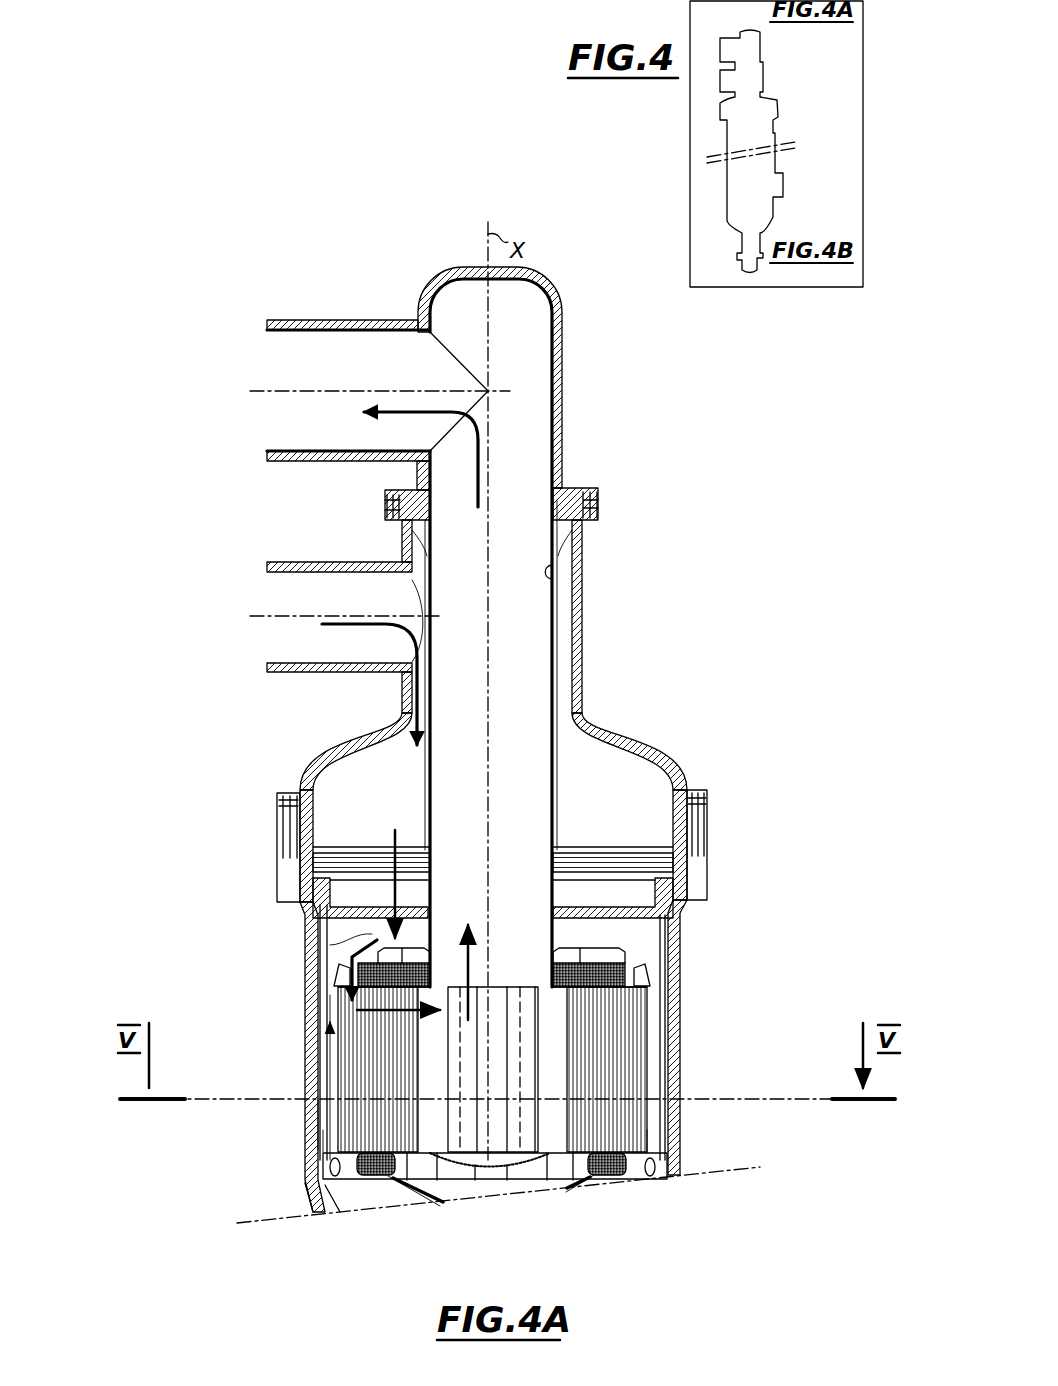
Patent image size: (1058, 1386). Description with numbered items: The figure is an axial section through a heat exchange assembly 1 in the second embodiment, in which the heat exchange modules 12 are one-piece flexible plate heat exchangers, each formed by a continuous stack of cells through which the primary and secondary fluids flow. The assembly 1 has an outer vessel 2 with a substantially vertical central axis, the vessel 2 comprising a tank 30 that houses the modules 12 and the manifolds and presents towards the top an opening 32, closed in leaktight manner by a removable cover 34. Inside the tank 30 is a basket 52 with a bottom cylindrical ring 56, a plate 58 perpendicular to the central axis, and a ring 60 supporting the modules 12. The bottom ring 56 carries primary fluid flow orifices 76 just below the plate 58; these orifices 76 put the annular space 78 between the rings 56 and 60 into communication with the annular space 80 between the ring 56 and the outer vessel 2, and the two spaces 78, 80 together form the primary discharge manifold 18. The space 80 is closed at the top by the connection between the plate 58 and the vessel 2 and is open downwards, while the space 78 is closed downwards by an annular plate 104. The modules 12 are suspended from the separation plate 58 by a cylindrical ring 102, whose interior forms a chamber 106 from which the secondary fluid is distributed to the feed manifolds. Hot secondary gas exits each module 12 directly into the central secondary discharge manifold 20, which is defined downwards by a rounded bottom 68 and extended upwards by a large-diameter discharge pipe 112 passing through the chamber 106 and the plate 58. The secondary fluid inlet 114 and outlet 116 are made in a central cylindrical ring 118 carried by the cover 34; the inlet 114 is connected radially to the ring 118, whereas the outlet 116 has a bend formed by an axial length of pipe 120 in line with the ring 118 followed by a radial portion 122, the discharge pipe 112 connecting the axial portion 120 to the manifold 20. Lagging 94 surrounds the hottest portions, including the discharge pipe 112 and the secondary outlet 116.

The heat exchange assembly 1 is at (748, 775).
The outer vessel 2 is at (300, 1171).
The heat exchange modules 12 is at (340, 1016).
The annular manifold 18 is at (318, 1195).
The central manifold 20 is at (560, 1056).
The tank 30 is at (300, 1049).
The opening 32 is at (650, 851).
The removable cover 34 is at (665, 743).
The basket 52 is at (676, 1071).
The bottom cylindrical ring 56 is at (320, 1140).
The plate 58 is at (310, 893).
The ring 60 is at (668, 893).
The rounded bottom 68 is at (520, 1163).
The primary fluid flow orifices 76 is at (322, 978).
The annular space 78 is at (330, 1080).
The annular space 80 is at (315, 1118).
The lagging 94 is at (432, 753).
The cylindrical ring 102 is at (670, 945).
The annular plate 104 is at (655, 1137).
The chamber 106 is at (330, 945).
The discharge pipe 112 is at (553, 578).
The secondary fluid inlet 114 is at (300, 662).
The secondary fluid outlet 116 is at (292, 343).
The central cylindrical ring 118 is at (582, 620).
The axial length of pipe 120 is at (562, 393).
The portion 122 is at (337, 463).